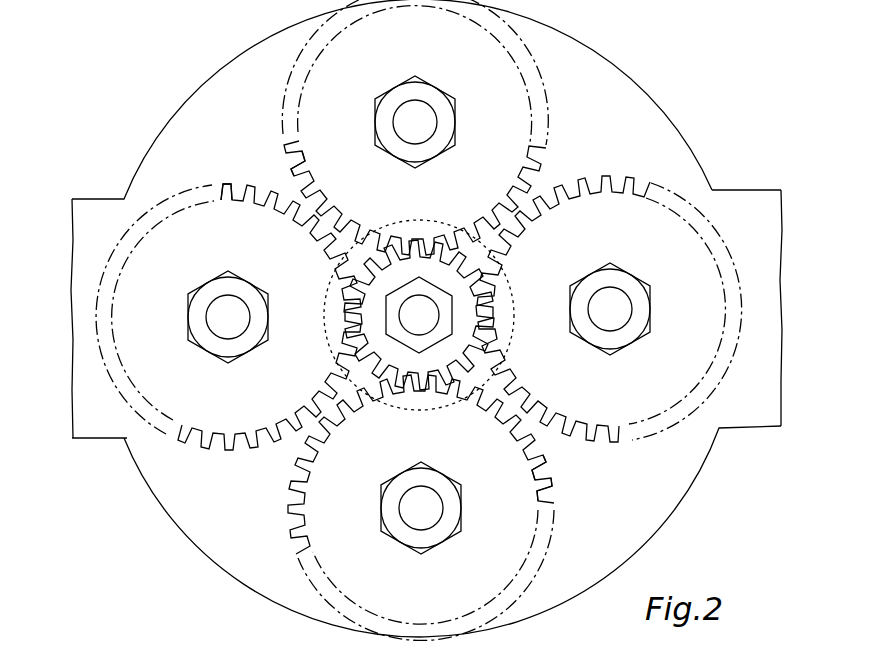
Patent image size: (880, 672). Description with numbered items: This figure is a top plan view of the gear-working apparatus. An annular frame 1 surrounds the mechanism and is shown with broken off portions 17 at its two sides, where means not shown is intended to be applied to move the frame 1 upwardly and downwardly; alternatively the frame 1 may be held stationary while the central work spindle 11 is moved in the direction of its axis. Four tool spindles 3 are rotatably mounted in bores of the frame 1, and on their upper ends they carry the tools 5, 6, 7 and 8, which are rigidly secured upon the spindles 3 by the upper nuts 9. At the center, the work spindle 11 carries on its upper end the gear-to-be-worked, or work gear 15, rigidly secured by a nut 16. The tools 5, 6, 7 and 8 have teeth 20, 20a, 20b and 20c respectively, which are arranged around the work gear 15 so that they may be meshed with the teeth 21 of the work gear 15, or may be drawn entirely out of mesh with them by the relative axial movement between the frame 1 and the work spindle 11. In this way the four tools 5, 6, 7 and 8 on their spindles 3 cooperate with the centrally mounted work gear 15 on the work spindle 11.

The annular frame 1 is at (667, 497).
The tool spindles 3 is at (419, 315).
The tool 5 is at (598, 222).
The tool 6 is at (312, 514).
The tool 7 is at (213, 418).
The tool 8 is at (500, 167).
The upper nuts 9 is at (454, 113).
The central work spindle 11 is at (419, 315).
The work gear 15 is at (419, 315).
The nut 16 is at (472, 671).
The broken off portions 17 is at (72, 404).
The teeth 20 is at (552, 428).
The teeth 20a is at (550, 473).
The teeth 20b is at (223, 190).
The teeth 20c is at (300, 165).
The teeth 21 is at (395, 366).